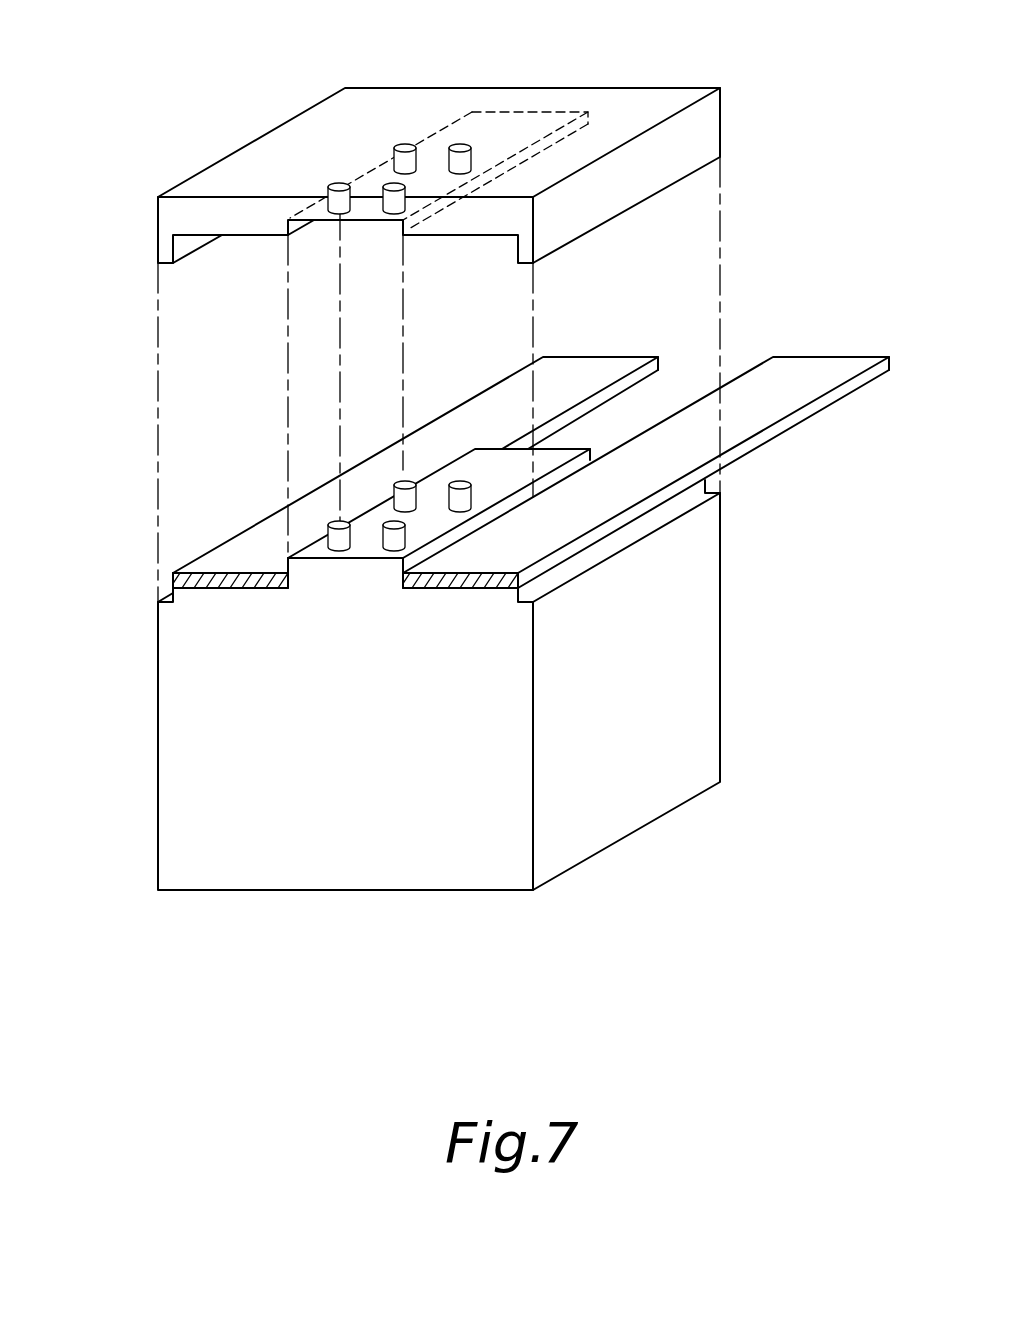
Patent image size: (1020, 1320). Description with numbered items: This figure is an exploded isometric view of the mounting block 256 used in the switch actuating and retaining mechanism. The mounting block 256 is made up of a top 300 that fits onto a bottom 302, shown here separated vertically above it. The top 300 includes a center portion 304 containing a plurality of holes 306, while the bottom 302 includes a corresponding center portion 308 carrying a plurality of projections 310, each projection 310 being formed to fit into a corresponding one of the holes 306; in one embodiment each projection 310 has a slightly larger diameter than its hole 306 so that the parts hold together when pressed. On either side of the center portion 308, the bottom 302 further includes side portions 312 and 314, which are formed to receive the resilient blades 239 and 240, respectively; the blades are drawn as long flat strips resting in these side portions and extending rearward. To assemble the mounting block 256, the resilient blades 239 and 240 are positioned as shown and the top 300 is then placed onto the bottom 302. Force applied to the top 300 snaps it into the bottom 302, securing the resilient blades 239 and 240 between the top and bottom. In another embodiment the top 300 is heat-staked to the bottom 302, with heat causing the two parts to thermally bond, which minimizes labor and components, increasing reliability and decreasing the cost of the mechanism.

The mounting block 256 is at (212, 116).
The top 300 is at (170, 214).
The bottom 302 is at (183, 752).
The center portion 304 is at (472, 133).
The holes 306 is at (399, 143).
The center portion 308 is at (354, 573).
The projections 310 is at (462, 480).
The side portion 312 is at (230, 598).
The side portion 314 is at (477, 598).
The resilient blade 239 is at (608, 365).
The resilient blade 240 is at (828, 365).